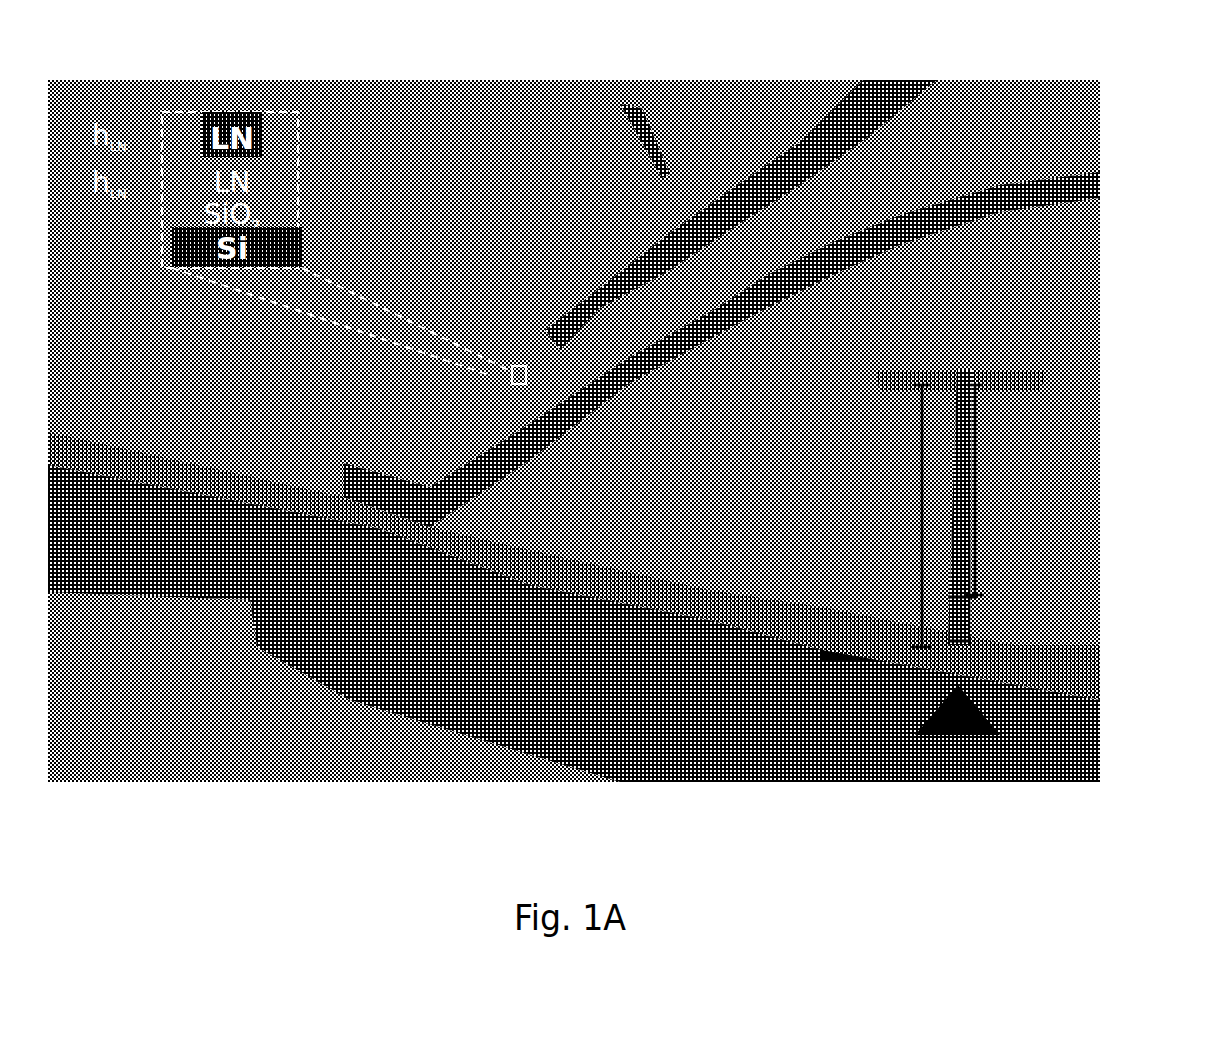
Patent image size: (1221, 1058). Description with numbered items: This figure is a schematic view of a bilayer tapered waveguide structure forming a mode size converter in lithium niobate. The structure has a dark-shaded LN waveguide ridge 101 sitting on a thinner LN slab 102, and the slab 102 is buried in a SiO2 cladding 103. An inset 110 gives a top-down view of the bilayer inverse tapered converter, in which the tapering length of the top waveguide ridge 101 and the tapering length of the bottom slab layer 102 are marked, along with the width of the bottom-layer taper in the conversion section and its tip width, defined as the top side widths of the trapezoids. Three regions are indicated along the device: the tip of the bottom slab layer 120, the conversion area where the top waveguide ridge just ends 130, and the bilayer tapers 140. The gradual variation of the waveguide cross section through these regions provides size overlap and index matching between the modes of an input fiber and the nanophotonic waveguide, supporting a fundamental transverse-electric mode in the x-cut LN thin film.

The LN waveguide ridge 101 is at (900, 100).
The LN slab 102 is at (731, 100).
The SiO2 cladding 103 is at (516, 100).
The inset 110 is at (1108, 452).
The tip of the bottom slab layer 120 is at (161, 598).
The conversion area where top waveguide ridge just ends 130 is at (545, 455).
The bilayer tapers 140 is at (709, 305).